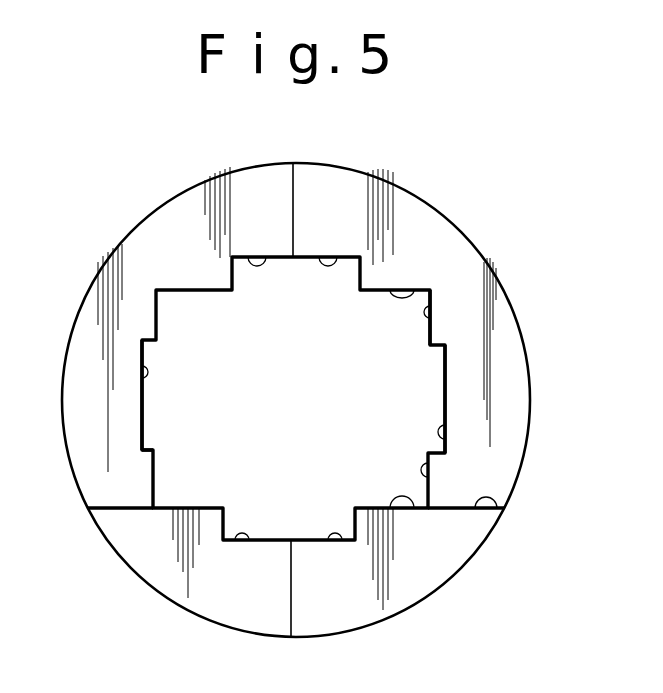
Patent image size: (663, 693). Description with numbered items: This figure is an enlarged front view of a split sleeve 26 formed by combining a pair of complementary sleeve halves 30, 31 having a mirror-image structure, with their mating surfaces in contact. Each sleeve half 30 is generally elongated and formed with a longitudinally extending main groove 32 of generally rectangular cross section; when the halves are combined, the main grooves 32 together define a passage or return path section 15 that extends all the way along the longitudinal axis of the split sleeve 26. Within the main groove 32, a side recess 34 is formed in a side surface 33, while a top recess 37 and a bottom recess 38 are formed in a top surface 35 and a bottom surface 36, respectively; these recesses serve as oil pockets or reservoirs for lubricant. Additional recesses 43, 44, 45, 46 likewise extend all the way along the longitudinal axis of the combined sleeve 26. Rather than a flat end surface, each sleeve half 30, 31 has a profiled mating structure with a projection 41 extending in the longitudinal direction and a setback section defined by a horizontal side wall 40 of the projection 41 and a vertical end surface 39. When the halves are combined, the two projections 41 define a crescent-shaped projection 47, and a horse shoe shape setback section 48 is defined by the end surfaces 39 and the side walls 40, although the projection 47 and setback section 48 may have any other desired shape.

The passage or return path section 15 is at (220, 362).
The split sleeve 26 is at (430, 218).
The sleeve half 30 is at (507, 387).
The sleeve half 31 is at (142, 247).
The main groove 32 is at (192, 418).
The side surface 33 is at (433, 317).
The side recess 34 is at (143, 385).
The top surface 35 is at (427, 290).
The bottom surface 36 is at (417, 508).
The top recess 37 is at (247, 257).
The bottom recess 38 is at (243, 542).
The vertical end surface 39 is at (503, 473).
The horizontal side wall 40 is at (500, 509).
The projection 41 is at (182, 592).
The recess 43 is at (285, 257).
The recess 44 is at (275, 542).
The recess 45 is at (140, 448).
The recess 46 is at (432, 358).
The crescent-shaped projection 47 is at (389, 607).
The horse shoe shape setback section 48 is at (167, 228).